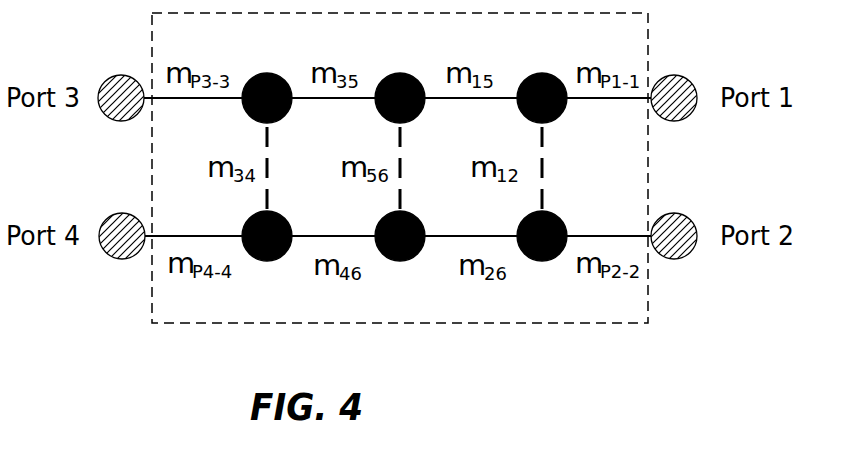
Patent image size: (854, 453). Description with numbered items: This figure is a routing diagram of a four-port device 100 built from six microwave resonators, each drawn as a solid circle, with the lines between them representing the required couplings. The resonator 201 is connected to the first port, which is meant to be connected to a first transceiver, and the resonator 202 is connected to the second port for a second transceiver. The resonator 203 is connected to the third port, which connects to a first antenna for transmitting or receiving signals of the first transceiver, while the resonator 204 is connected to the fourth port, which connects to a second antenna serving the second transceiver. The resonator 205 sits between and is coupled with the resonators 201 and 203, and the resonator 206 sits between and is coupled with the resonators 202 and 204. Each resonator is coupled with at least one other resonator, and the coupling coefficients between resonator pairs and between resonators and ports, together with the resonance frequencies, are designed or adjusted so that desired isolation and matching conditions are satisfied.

The four-port device 100 is at (400, 323).
The resonator 201 is at (544, 76).
The resonator 202 is at (545, 261).
The resonator 203 is at (269, 76).
The resonator 204 is at (269, 261).
The resonator 205 is at (403, 76).
The resonator 206 is at (405, 261).